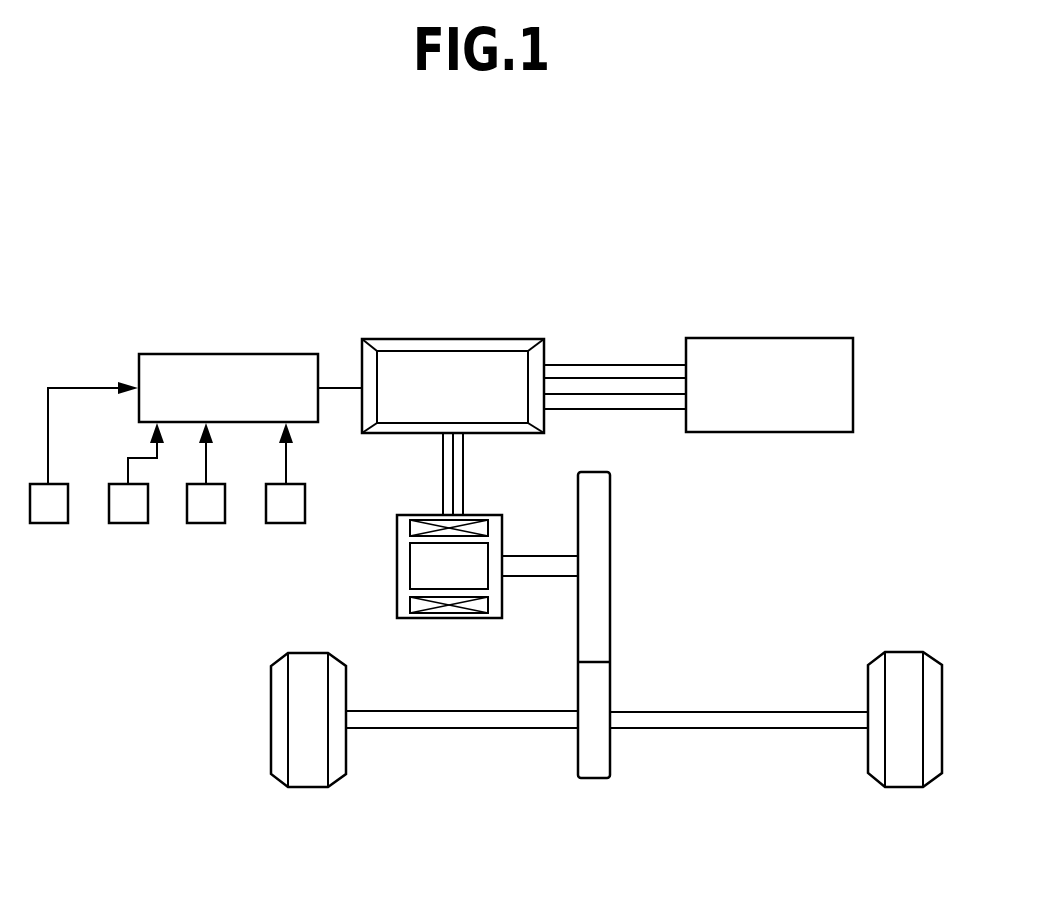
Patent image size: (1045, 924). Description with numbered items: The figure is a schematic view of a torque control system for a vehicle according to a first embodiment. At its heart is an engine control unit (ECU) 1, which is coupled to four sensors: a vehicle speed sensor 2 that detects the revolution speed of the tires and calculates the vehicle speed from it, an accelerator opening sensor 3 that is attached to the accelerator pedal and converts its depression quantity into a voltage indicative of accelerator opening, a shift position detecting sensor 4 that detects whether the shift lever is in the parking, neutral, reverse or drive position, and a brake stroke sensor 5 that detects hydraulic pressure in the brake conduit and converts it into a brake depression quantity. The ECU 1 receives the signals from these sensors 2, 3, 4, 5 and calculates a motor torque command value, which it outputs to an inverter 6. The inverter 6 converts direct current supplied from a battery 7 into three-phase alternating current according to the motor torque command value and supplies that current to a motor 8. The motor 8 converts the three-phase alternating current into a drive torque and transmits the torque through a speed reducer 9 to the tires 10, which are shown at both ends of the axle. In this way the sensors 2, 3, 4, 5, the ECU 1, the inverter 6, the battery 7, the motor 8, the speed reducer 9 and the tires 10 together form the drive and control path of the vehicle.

The engine control unit (ECU) 1 is at (223, 354).
The vehicle speed sensor 2 is at (50, 523).
The accelerator opening sensor 3 is at (128, 523).
The shift position detecting sensor 4 is at (206, 523).
The brake stroke sensor 5 is at (286, 523).
The inverter 6 is at (465, 339).
The battery 7 is at (800, 338).
The motor 8 is at (423, 570).
The speed reducer 9 is at (634, 638).
The tires 10 is at (297, 708).